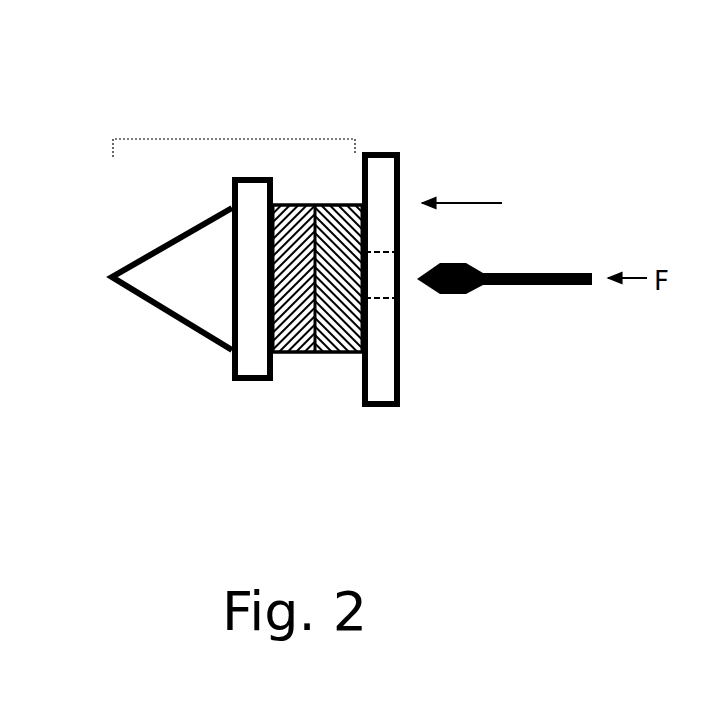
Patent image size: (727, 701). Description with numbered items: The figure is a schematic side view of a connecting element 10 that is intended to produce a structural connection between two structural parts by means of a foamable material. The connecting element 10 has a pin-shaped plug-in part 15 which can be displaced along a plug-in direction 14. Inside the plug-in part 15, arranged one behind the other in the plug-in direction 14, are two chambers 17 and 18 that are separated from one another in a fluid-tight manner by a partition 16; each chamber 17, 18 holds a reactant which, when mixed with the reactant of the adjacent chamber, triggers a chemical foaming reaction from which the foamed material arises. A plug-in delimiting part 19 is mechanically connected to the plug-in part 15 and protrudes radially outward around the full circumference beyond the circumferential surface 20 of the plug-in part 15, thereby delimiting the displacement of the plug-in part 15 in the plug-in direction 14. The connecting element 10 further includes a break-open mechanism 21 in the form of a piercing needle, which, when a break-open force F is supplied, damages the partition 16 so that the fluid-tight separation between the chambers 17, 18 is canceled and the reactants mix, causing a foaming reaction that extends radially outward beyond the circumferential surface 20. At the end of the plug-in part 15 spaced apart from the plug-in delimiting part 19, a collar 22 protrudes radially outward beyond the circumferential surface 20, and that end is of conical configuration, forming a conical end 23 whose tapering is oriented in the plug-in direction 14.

The connecting element 10 is at (124, 100).
The plug-in direction 14 is at (463, 186).
The plug-in part 15 is at (236, 139).
The partition 16 is at (312, 356).
The chamber 17 is at (342, 362).
The chamber 18 is at (286, 362).
The plug-in delimiting part 19 is at (381, 167).
The circumferential surface 20 is at (296, 203).
The break-open mechanism 21 is at (497, 273).
The collar 22 is at (248, 367).
The conical end 23 is at (178, 295).